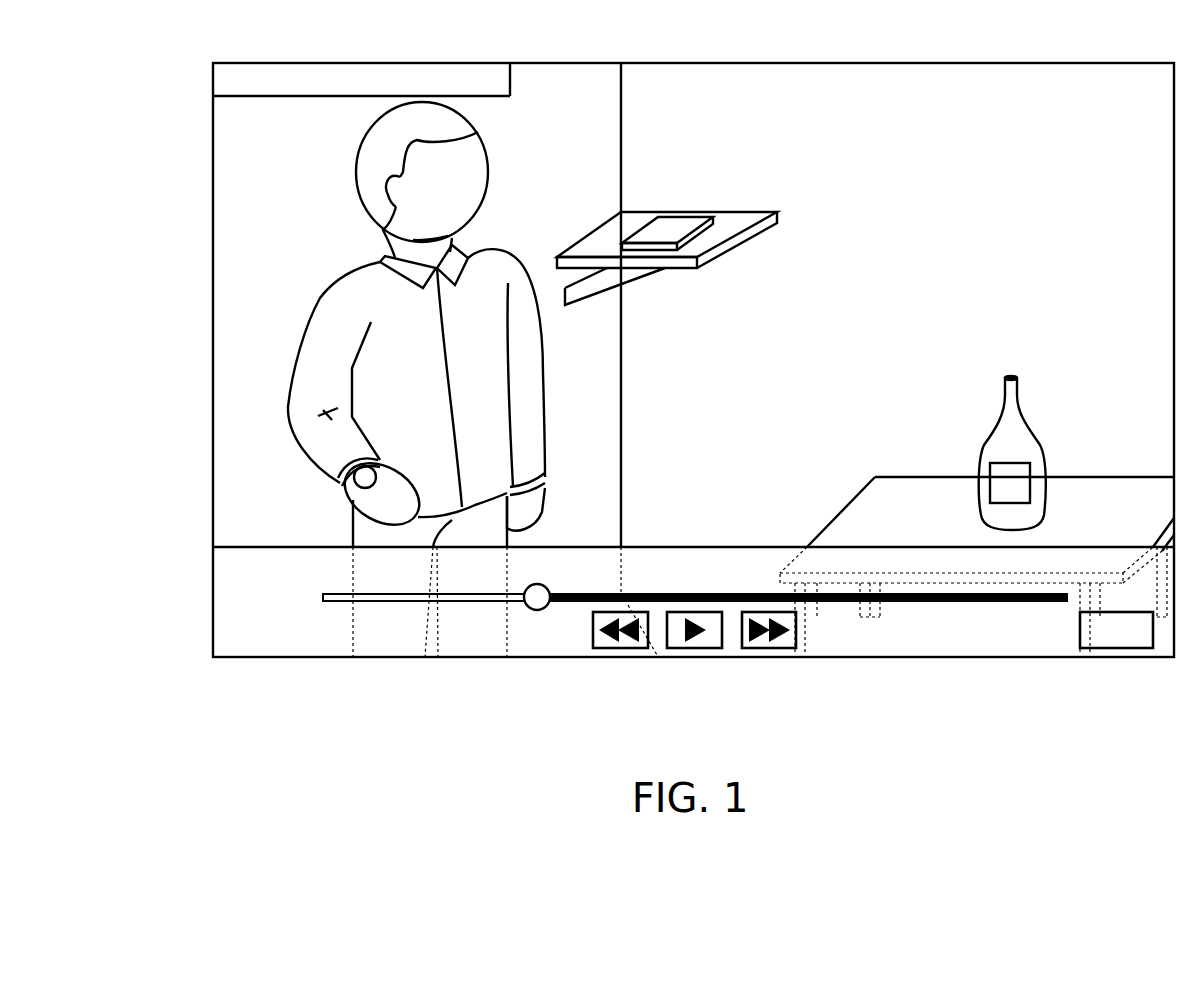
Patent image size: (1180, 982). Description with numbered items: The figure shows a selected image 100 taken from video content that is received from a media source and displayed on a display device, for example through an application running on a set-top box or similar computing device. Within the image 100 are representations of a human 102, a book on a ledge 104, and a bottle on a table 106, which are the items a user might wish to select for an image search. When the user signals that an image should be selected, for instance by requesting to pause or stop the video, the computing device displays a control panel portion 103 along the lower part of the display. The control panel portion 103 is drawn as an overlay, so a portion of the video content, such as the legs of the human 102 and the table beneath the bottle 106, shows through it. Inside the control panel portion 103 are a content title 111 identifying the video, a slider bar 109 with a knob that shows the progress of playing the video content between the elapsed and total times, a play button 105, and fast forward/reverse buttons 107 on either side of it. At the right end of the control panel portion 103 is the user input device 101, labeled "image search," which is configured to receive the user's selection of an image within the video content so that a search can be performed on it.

The selected image 100 is at (166, 97).
The user input device 101 is at (1113, 648).
The human 102 is at (330, 231).
The control panel portion 103 is at (213, 640).
The book on a ledge 104 is at (740, 187).
The play button 105 is at (695, 648).
The bottle on a table 106 is at (1060, 403).
The fast forward/reverse buttons 107 is at (621, 648).
The slider bar 109 is at (538, 610).
The content title 111 is at (240, 574).